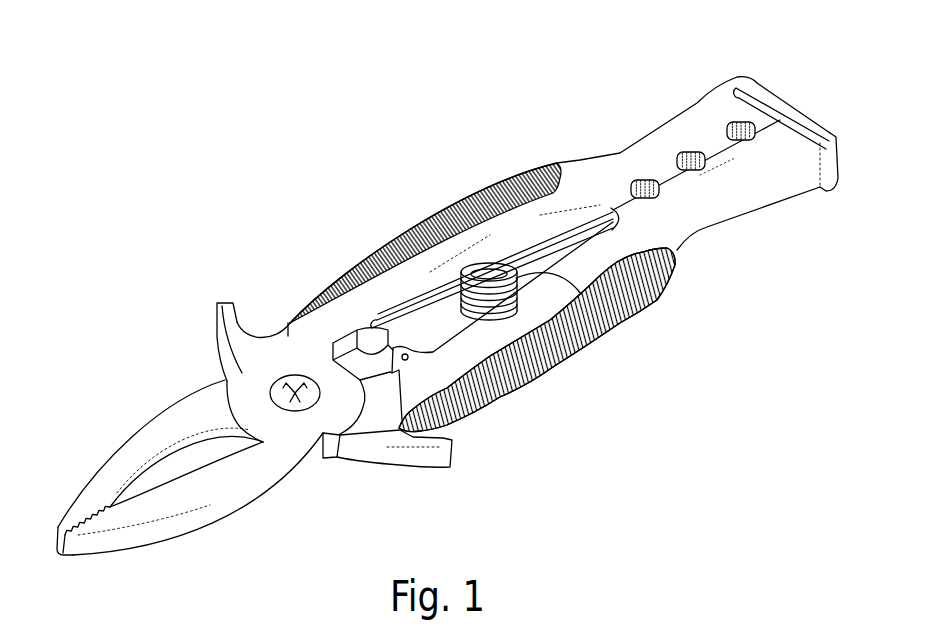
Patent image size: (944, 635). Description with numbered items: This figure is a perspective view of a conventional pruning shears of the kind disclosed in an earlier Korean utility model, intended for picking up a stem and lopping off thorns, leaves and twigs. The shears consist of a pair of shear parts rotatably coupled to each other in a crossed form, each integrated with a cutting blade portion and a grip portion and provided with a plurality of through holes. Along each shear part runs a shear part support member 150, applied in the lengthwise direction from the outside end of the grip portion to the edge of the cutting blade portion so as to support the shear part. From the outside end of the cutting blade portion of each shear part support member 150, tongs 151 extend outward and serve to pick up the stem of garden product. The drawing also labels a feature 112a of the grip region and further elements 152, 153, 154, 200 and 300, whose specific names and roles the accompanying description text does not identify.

The grip portion 112a is at (432, 188).
The shear part support member 150 is at (290, 333).
The tongs 151 is at (85, 498).
The hook portion 152 is at (225, 313).
The end portion 153 is at (687, 120).
The protrusion 154 is at (699, 153).
The coil spring 200 is at (627, 324).
The rod 300 is at (780, 117).